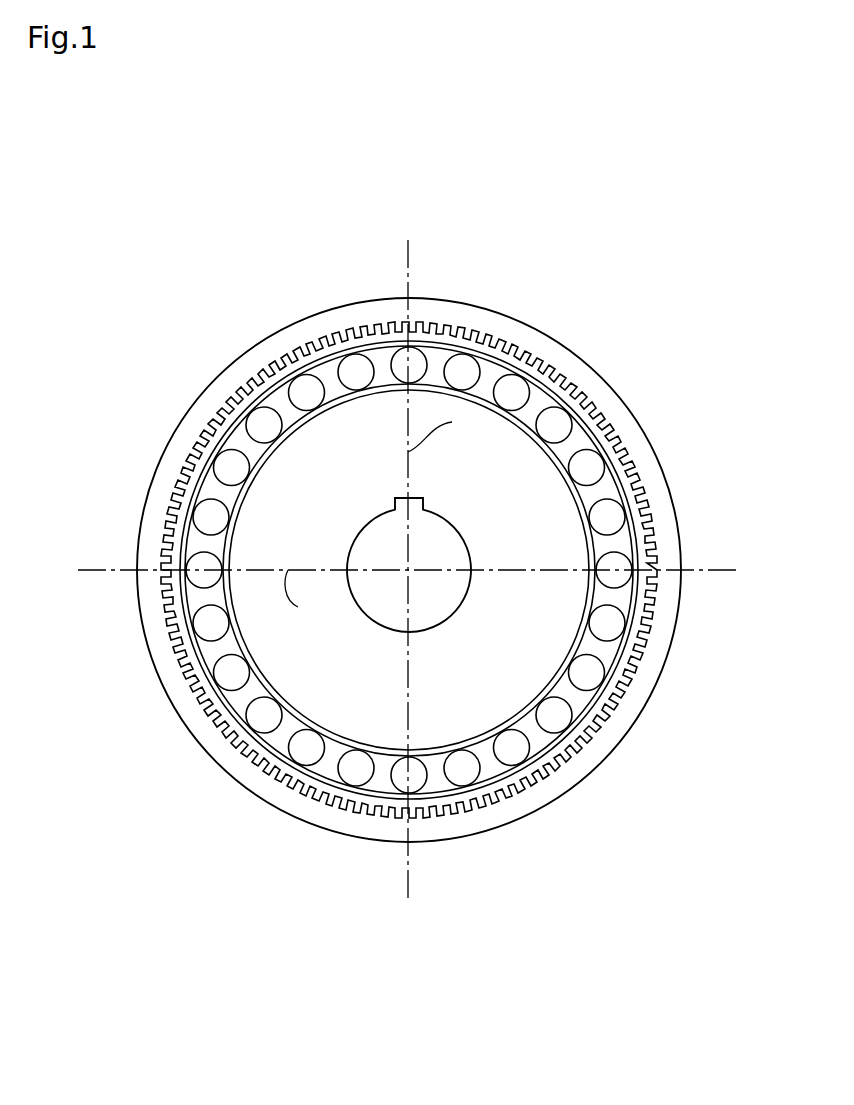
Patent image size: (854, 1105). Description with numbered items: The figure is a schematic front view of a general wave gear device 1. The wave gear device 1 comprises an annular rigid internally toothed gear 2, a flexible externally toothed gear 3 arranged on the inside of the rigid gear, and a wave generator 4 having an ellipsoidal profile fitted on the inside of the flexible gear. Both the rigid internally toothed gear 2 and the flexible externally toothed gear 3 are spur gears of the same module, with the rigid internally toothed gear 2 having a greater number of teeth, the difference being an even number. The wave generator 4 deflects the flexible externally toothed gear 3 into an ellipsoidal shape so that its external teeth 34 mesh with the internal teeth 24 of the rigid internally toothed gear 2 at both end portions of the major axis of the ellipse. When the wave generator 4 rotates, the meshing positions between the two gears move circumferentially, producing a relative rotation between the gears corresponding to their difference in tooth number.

The wave gear device 1 is at (433, 544).
The rigid internally toothed gear 2 is at (642, 448).
The internal tooth 24 is at (600, 420).
The flexible externally toothed gear 3 is at (650, 503).
The external teeth 34 is at (613, 438).
The wave generator 4 is at (570, 592).